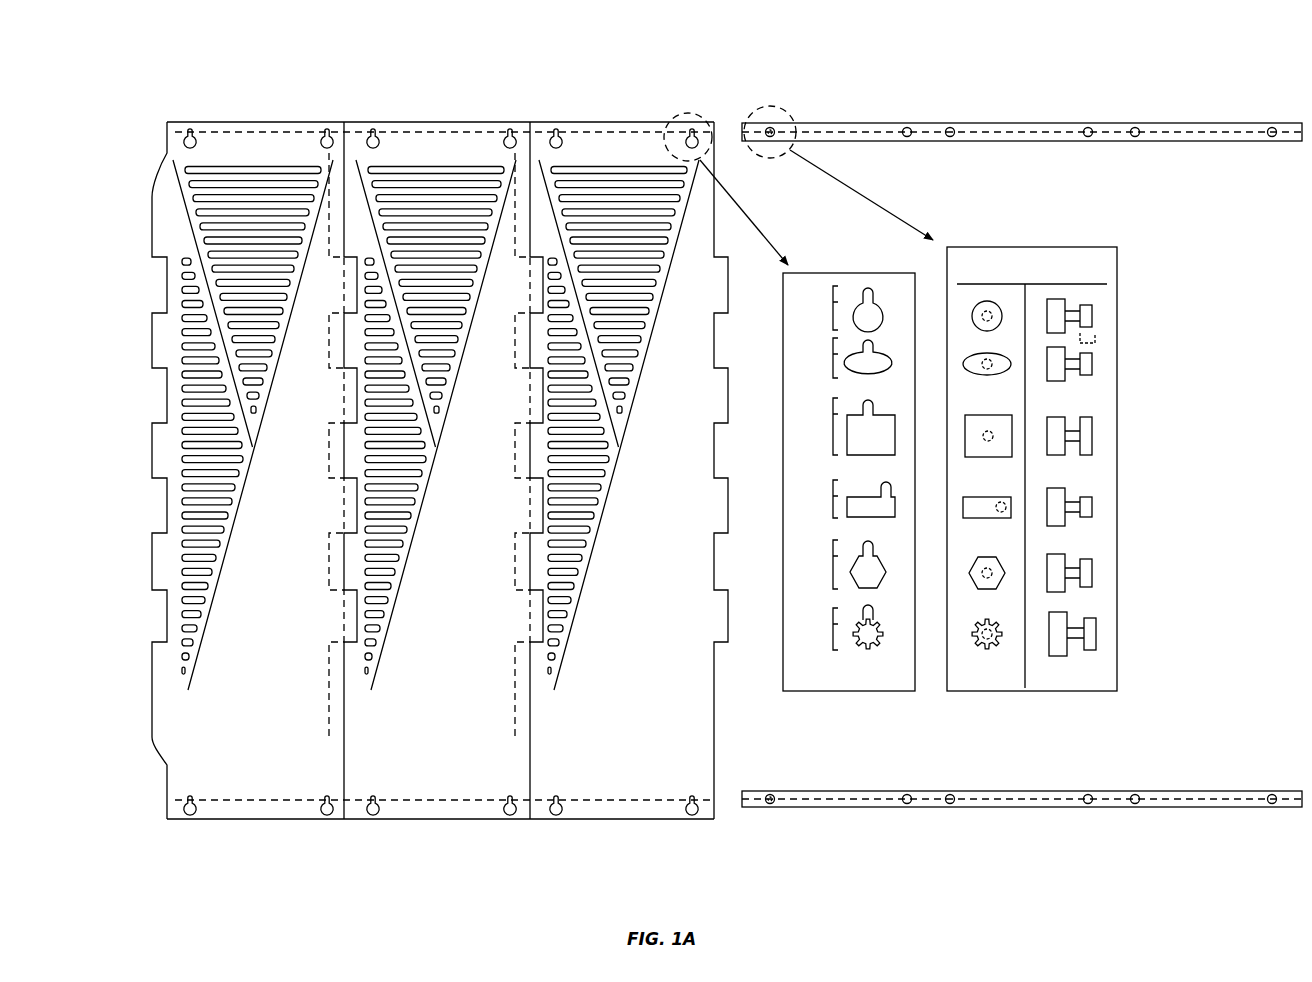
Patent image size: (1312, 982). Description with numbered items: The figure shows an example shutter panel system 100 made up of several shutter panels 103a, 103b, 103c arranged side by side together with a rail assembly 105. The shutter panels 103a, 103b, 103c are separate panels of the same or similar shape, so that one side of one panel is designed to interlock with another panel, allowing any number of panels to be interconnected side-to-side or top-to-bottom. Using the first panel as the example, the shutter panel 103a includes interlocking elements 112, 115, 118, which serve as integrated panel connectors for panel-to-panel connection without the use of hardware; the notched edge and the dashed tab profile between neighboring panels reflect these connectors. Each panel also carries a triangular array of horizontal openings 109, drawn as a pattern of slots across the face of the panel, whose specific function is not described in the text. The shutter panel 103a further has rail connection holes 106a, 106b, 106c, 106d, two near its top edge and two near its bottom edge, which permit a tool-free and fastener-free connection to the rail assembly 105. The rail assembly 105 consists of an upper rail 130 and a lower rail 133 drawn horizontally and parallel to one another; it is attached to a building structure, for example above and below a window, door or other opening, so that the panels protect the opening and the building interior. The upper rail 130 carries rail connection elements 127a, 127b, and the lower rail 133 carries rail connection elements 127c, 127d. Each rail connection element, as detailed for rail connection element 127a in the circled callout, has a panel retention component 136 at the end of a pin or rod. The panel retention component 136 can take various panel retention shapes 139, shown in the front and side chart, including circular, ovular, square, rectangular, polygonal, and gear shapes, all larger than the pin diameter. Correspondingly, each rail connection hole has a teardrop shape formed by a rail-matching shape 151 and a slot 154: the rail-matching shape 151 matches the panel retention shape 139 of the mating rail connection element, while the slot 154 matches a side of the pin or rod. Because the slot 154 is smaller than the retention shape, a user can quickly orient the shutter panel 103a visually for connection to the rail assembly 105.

The shutter panel system 100 is at (155, 52).
The shutter panel 103a is at (228, 475).
The shutter panel 103b is at (449, 470).
The shutter panel 103c is at (633, 470).
The rail assembly 105 is at (1238, 105).
The rail connection hole 106a is at (183, 137).
The rail connection hole 106b is at (322, 137).
The rail connection hole 106c is at (186, 816).
The rail connection hole 106d is at (320, 813).
The vent slot array 109 is at (185, 186).
The interlocking element 112 is at (163, 232).
The interlocking element 115 is at (172, 290).
The interlocking element 118 is at (355, 290).
The rail connection element 127a is at (770, 126).
The rail connection element 127b is at (905, 126).
The rail connection element 127c is at (768, 805).
The rail connection element 127d is at (905, 807).
The upper rail 130 is at (1028, 122).
The lower rail 133 is at (1030, 815).
The panel retention component 136 is at (1092, 334).
The panel retention shape 139 is at (1057, 469).
The rail-matching shape 151 is at (828, 319).
The slot 154 is at (818, 297).